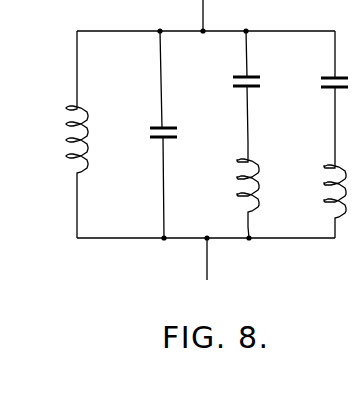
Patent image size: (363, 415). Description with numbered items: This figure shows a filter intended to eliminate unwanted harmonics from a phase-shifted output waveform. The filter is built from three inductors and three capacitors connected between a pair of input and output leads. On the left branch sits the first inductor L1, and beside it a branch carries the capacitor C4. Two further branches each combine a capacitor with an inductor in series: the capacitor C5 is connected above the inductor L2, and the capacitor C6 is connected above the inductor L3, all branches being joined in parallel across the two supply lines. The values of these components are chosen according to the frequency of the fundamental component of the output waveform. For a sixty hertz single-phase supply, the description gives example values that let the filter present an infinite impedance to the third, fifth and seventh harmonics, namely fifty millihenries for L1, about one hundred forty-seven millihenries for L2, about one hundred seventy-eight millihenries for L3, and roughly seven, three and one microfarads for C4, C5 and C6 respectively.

The inductor L1 is at (67, 129).
The capacitor C4 is at (155, 127).
The capacitor C5 is at (244, 77).
The capacitor C6 is at (333, 74).
The inductor L2 is at (243, 172).
The inductor L3 is at (325, 170).